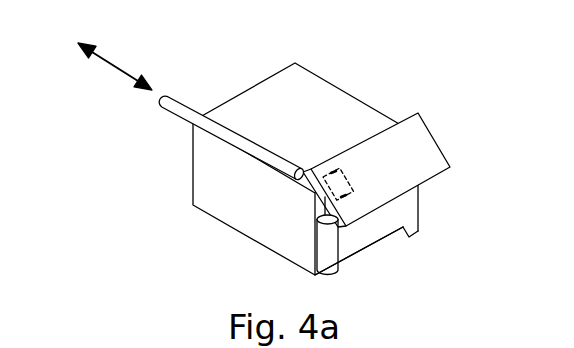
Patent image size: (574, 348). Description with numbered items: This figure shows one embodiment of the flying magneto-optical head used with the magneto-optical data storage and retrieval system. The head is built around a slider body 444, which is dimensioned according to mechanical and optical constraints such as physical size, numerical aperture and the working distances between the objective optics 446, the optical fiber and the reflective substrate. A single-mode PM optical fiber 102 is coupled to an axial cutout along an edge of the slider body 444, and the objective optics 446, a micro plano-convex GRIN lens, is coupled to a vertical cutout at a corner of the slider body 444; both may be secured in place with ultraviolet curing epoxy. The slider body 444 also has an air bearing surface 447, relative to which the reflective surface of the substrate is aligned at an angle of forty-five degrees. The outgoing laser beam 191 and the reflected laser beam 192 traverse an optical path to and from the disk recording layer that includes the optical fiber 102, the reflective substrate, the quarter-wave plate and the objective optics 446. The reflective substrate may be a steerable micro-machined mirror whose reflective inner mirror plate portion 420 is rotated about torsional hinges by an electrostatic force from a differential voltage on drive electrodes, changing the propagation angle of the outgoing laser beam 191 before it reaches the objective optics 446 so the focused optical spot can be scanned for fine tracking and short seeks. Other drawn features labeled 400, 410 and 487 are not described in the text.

The single-mode PM optical fiber 102 is at (186, 98).
The outgoing laser beam 191 is at (124, 82).
The reflected laser beam 192 is at (99, 52).
The plate 400 is at (427, 127).
The sensing region 410 is at (345, 175).
The reflective inner mirror plate portion 420 is at (313, 192).
The slider body 444 is at (230, 177).
The objective optics 446 is at (325, 249).
The air bearing surface 447 is at (410, 237).
The base edge 487 is at (369, 253).